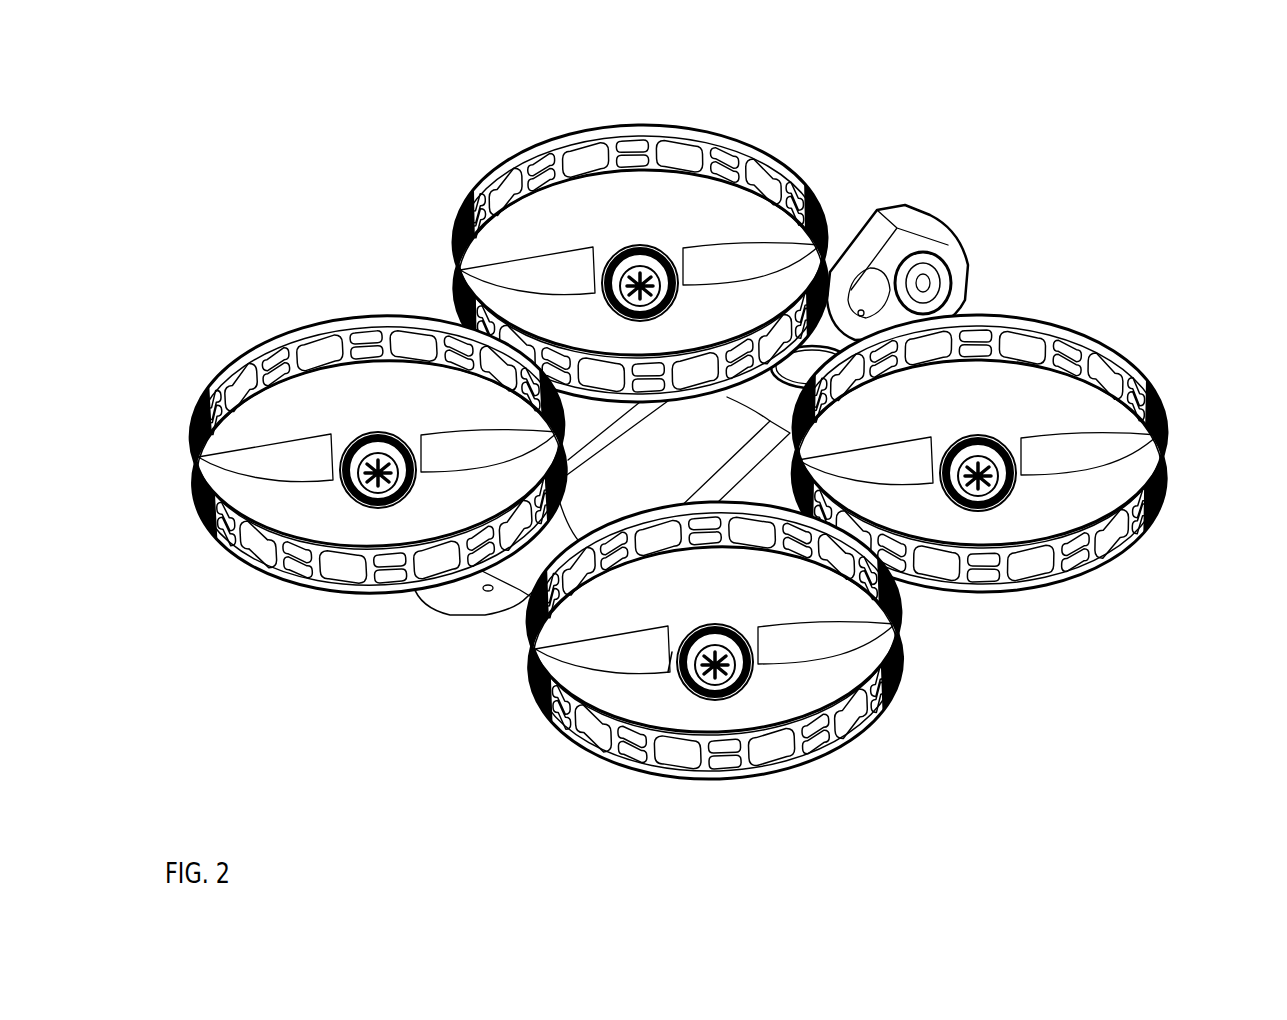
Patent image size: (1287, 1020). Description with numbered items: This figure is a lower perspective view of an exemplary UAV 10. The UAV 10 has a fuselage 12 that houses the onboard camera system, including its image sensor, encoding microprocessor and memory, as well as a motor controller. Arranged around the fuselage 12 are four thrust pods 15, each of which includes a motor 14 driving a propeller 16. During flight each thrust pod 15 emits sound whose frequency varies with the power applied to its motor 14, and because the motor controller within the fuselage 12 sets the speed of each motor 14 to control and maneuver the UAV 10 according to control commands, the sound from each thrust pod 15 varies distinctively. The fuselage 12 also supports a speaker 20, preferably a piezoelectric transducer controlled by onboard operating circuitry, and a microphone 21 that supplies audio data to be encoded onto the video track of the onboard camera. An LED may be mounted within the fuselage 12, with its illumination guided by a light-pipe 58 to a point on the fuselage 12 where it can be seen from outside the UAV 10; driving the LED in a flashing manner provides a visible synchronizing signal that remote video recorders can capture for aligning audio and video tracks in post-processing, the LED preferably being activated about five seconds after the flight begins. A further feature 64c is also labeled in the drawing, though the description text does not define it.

The UAV 10 is at (439, 203).
The fuselage 12 is at (974, 245).
The motor 14 is at (683, 297).
The thrust pod 15 is at (669, 108).
The propeller 16 is at (562, 232).
The speaker 20 is at (818, 370).
The microphone 21 is at (482, 598).
The light-pipe 58 is at (892, 203).
The sensor 64c is at (664, 686).